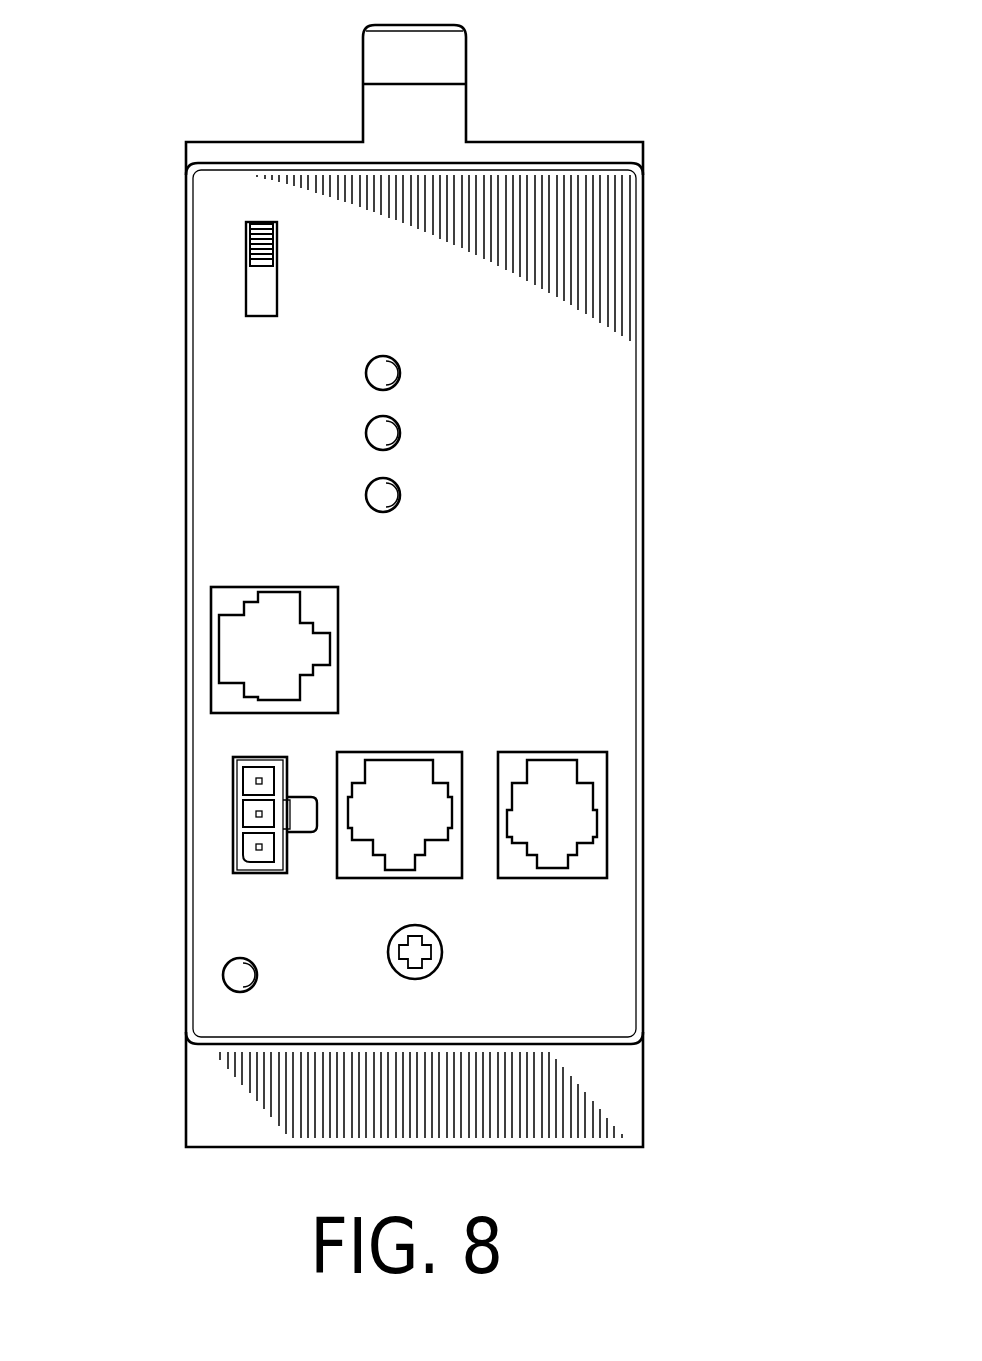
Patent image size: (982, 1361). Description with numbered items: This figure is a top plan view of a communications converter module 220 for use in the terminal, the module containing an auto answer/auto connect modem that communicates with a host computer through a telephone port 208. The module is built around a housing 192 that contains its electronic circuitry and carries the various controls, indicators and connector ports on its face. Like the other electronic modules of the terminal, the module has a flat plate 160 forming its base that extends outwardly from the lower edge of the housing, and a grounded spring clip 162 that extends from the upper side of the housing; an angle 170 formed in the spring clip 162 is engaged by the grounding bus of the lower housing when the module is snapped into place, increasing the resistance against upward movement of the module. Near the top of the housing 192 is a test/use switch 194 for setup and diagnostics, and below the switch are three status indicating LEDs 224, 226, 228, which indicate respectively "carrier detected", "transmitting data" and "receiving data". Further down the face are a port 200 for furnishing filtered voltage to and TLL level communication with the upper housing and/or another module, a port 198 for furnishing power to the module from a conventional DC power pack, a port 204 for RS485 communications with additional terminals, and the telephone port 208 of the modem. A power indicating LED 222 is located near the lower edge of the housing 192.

The flat plate 160 is at (618, 1088).
The grounded spring clip 162 is at (447, 107).
The angle 170 is at (392, 82).
The housing 192 is at (275, 453).
The test/use switch 194 is at (250, 243).
The port 198 is at (250, 812).
The port 200 is at (243, 648).
The port 204 is at (403, 780).
The telephone port 208 is at (573, 802).
The communications converter module 220 is at (719, 396).
The power indicating LED 222 is at (237, 970).
The status indicating LED 224 is at (400, 368).
The status indicating LED 226 is at (400, 435).
The status indicating LED 228 is at (398, 498).